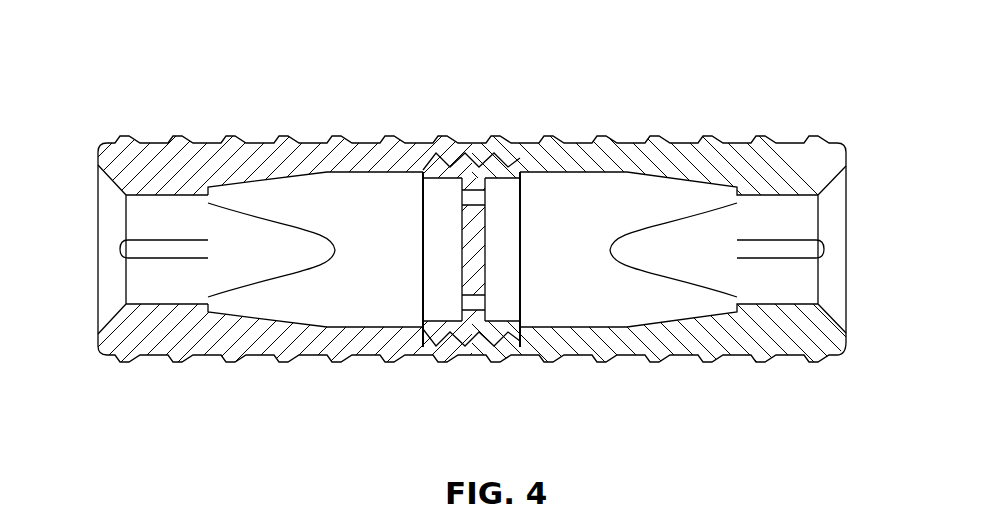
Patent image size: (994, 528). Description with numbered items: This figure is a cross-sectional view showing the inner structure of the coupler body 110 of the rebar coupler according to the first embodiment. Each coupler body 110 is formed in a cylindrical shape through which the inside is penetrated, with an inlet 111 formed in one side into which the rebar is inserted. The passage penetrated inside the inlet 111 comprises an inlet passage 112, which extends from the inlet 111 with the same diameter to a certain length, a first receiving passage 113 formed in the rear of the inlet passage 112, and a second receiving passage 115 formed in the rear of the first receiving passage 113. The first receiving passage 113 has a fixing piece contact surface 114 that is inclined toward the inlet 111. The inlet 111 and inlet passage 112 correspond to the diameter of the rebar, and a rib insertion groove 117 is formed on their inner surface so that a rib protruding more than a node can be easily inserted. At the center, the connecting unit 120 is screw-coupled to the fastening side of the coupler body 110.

The coupler body 110 is at (150, 137).
The inlet 111 is at (115, 270).
The inlet passage 112 is at (156, 221).
The first receiving passage 113 is at (258, 183).
The fixing piece contact surface 114 is at (248, 270).
The second receiving passage 115 is at (381, 191).
The rib insertion groove 117 is at (824, 250).
The connecting unit 120 is at (504, 146).